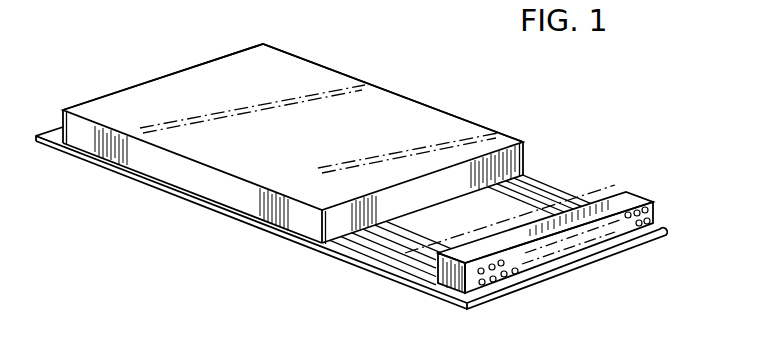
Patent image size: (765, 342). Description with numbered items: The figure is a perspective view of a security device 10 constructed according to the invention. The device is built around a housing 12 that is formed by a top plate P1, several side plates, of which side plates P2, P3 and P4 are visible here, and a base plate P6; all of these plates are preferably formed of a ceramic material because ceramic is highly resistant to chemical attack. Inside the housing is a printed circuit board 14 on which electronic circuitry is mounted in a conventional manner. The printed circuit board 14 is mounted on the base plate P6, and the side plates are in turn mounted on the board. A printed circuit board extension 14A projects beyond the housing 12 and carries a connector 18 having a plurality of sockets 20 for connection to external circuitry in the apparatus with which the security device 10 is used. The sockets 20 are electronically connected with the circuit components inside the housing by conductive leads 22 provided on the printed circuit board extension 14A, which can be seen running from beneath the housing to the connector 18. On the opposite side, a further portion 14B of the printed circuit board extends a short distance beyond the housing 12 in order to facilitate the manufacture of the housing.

The security device 10 is at (388, 78).
The housing 12 is at (142, 77).
The printed circuit board 14 is at (155, 191).
The printed circuit board extension 14A is at (425, 278).
The printed circuit board portion 14B is at (46, 138).
The connector 18 is at (627, 196).
The sockets 20 is at (640, 226).
The conductive leads 22 is at (382, 258).
The top plate P1 is at (428, 118).
The side plate P2 is at (505, 168).
The side plate P3 is at (523, 168).
The side plate P4 is at (223, 193).
The base plate P6 is at (268, 236).